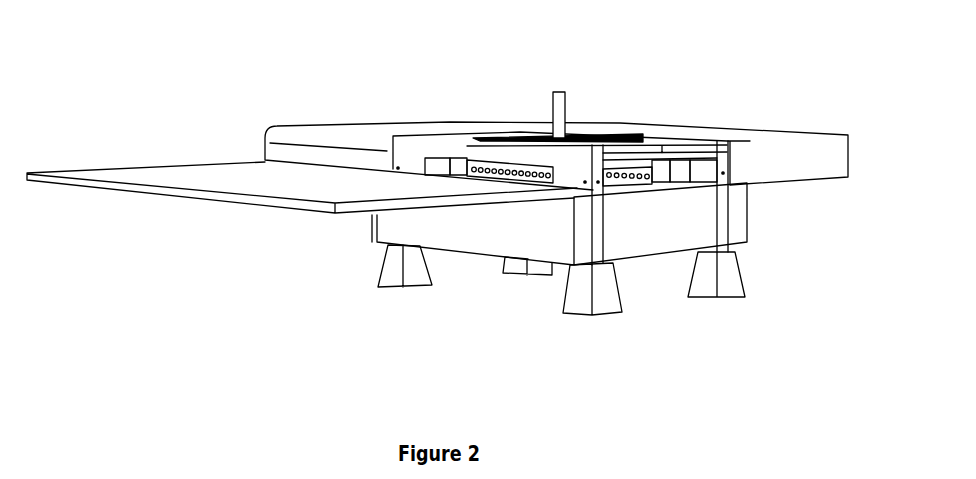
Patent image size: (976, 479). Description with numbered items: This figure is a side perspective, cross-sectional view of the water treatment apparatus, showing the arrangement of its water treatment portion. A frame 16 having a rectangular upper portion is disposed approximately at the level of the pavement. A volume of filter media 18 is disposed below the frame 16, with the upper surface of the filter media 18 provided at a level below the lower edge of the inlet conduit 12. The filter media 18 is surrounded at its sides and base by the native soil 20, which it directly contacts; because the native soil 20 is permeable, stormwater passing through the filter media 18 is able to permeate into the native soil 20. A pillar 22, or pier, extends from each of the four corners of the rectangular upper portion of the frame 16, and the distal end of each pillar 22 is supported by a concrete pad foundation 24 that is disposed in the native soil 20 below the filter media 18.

The inlet conduit 12 is at (458, 162).
The frame 16 is at (405, 143).
The filter media 18 is at (670, 238).
The native soil 20 is at (556, 215).
The pillar 22 is at (597, 237).
The concrete pad foundation 24 is at (563, 300).